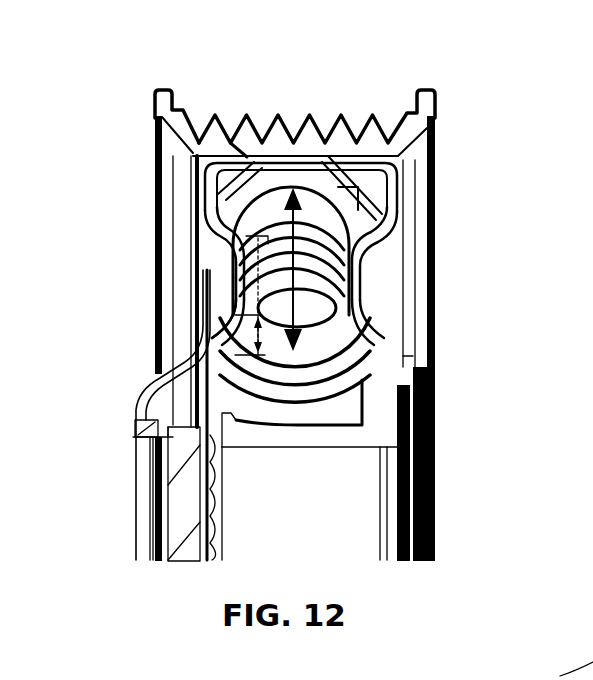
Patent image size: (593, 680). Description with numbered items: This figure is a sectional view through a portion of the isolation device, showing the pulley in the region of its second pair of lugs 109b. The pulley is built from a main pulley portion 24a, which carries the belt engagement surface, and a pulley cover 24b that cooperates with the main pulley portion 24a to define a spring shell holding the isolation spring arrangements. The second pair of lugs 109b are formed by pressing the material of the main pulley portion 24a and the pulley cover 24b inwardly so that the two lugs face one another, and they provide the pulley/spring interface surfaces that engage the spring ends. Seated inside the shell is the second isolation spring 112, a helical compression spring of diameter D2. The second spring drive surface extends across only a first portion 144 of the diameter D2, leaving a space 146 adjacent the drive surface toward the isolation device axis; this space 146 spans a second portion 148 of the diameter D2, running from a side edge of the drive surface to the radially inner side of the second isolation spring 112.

The main pulley portion 24a is at (424, 105).
The pulley cover 24b is at (154, 340).
The second pair of lugs 109b is at (232, 272).
The second isolation spring 112 is at (333, 338).
The first portion of the diameter D2 144 is at (283, 262).
The space 146 is at (237, 338).
The second portion of the diameter D2 148 is at (266, 332).
The diameter of the second isolation spring D2 is at (322, 258).